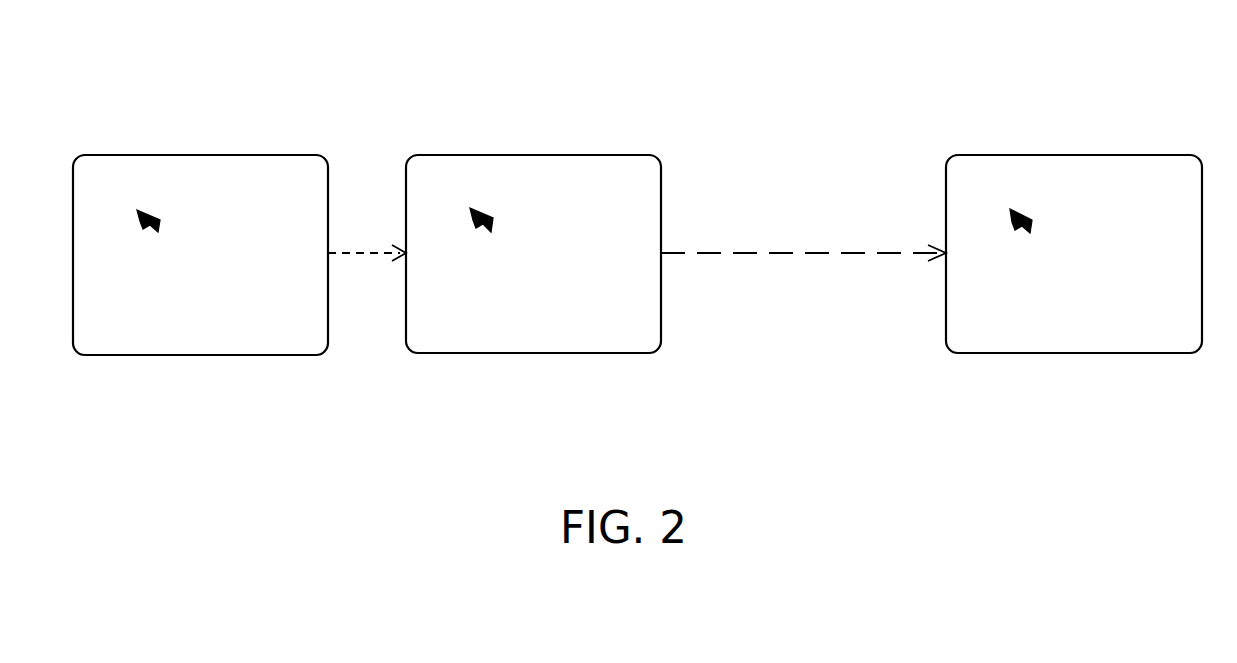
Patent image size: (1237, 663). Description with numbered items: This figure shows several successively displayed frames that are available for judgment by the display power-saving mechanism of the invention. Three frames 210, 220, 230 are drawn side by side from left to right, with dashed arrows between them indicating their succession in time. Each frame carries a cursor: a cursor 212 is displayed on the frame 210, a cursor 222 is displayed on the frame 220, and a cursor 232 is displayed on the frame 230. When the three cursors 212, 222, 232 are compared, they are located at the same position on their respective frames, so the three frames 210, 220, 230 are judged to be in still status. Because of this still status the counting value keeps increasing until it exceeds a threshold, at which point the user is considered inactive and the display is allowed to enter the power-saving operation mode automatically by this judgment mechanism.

The frame 210 is at (202, 155).
The cursor 212 is at (160, 219).
The frame 220 is at (532, 155).
The cursor 222 is at (493, 218).
The frame 230 is at (1050, 155).
The cursor 232 is at (1032, 221).